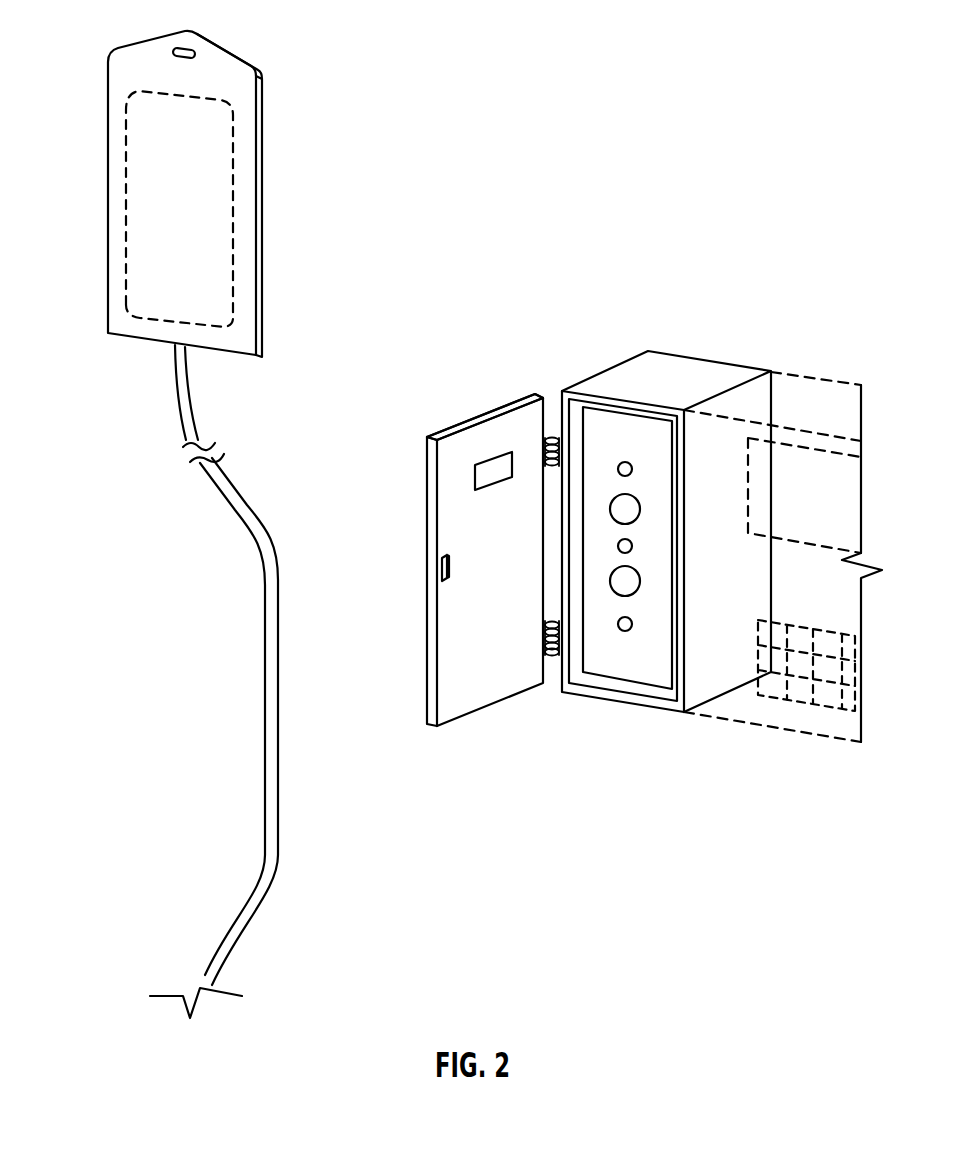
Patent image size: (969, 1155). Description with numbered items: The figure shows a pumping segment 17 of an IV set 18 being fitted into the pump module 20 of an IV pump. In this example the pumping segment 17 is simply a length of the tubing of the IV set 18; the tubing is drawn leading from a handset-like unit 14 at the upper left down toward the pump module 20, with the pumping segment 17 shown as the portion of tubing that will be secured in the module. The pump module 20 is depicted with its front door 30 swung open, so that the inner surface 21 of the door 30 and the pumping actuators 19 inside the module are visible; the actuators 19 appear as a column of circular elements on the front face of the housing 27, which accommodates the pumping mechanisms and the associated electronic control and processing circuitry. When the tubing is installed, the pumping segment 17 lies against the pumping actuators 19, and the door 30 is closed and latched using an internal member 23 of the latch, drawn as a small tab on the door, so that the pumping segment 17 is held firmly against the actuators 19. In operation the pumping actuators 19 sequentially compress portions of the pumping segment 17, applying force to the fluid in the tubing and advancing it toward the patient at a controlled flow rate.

The handset 14 is at (137, 148).
The pumping segment 17 is at (265, 710).
The IV set 18 is at (163, 370).
The pumping actuators 19 is at (640, 582).
The pump module 20 is at (755, 575).
The inner surface 21 is at (445, 485).
The internal member 23 is at (440, 567).
The housing 27 is at (608, 380).
The front door 30 is at (470, 418).